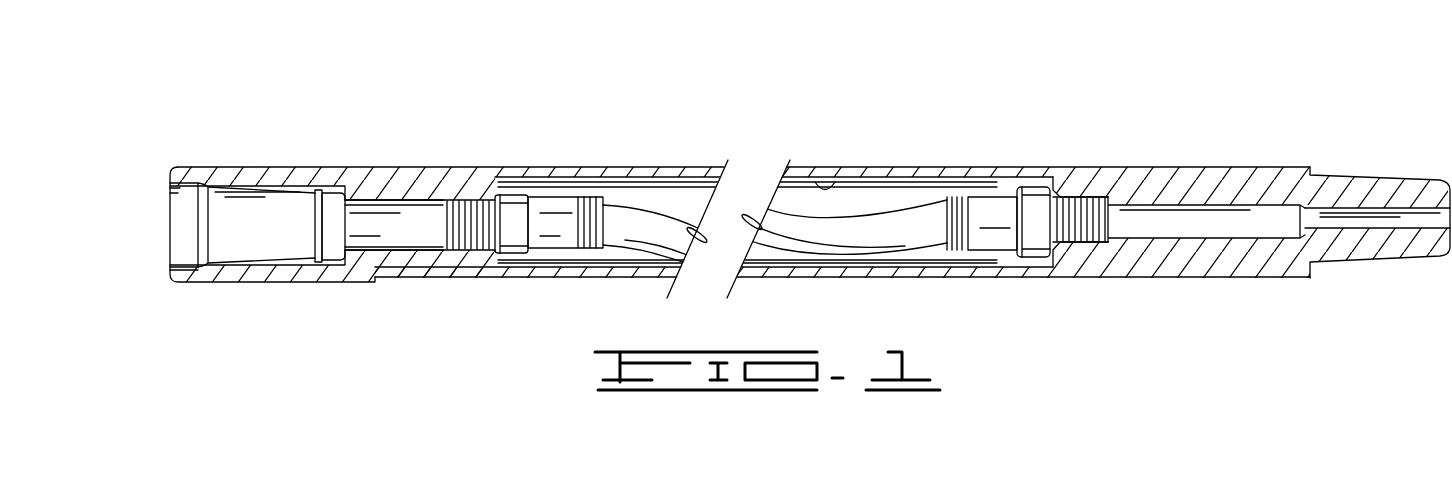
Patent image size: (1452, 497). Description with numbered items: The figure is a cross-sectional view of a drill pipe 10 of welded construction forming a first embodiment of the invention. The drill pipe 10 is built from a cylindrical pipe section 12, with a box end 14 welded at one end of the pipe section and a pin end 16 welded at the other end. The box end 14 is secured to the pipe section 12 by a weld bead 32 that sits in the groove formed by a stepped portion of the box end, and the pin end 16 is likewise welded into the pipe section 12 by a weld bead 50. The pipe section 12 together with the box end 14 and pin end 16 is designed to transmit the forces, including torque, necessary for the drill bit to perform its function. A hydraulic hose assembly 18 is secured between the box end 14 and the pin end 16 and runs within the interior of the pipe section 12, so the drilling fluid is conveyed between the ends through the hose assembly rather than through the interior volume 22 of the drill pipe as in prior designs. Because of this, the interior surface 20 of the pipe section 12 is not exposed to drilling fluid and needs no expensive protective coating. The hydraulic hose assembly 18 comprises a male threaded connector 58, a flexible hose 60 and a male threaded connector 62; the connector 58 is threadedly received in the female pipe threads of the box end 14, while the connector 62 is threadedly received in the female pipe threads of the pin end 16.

The drill pipe 10 is at (556, 103).
The pipe section 12 is at (1030, 160).
The box end 14 is at (265, 165).
The pin end 16 is at (1285, 160).
The hydraulic hose assembly 18 is at (915, 178).
The interior surface 20 is at (845, 182).
The interior volume 22 is at (670, 193).
The weld bead 32 is at (375, 167).
The weld bead 50 is at (1170, 166).
The male threaded connector 58 is at (553, 254).
The flexible hose 60 is at (895, 242).
The male threaded connector 62 is at (1003, 256).